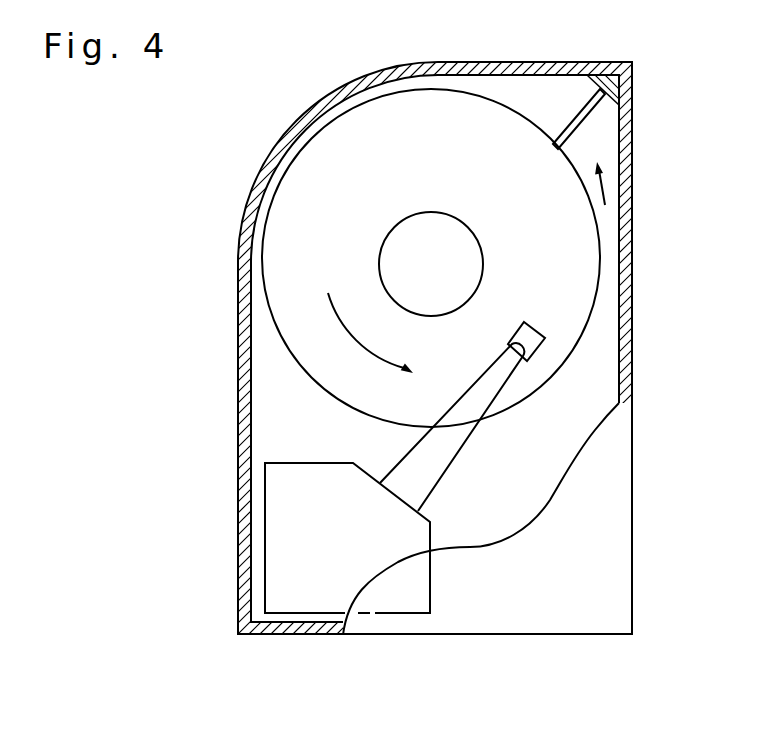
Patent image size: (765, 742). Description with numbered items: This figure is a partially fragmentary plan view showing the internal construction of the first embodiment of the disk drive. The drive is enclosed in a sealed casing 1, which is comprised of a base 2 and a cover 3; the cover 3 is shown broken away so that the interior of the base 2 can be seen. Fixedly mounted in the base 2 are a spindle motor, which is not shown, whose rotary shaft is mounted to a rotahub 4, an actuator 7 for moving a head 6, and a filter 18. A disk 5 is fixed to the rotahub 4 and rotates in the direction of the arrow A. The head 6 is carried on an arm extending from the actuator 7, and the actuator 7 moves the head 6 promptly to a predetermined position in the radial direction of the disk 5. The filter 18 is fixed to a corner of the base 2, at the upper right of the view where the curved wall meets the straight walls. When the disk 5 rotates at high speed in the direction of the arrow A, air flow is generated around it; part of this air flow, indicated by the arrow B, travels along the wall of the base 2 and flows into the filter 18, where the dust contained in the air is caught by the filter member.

The sealed casing 1 is at (579, 640).
The base 2 is at (453, 84).
The cover 3 is at (613, 465).
The rotahub 4 is at (399, 212).
The disk 5 is at (285, 225).
The head 6 is at (542, 325).
The actuator 7 is at (280, 523).
The filter 18 is at (573, 113).
The arrow A is at (355, 342).
The arrow B is at (605, 189).